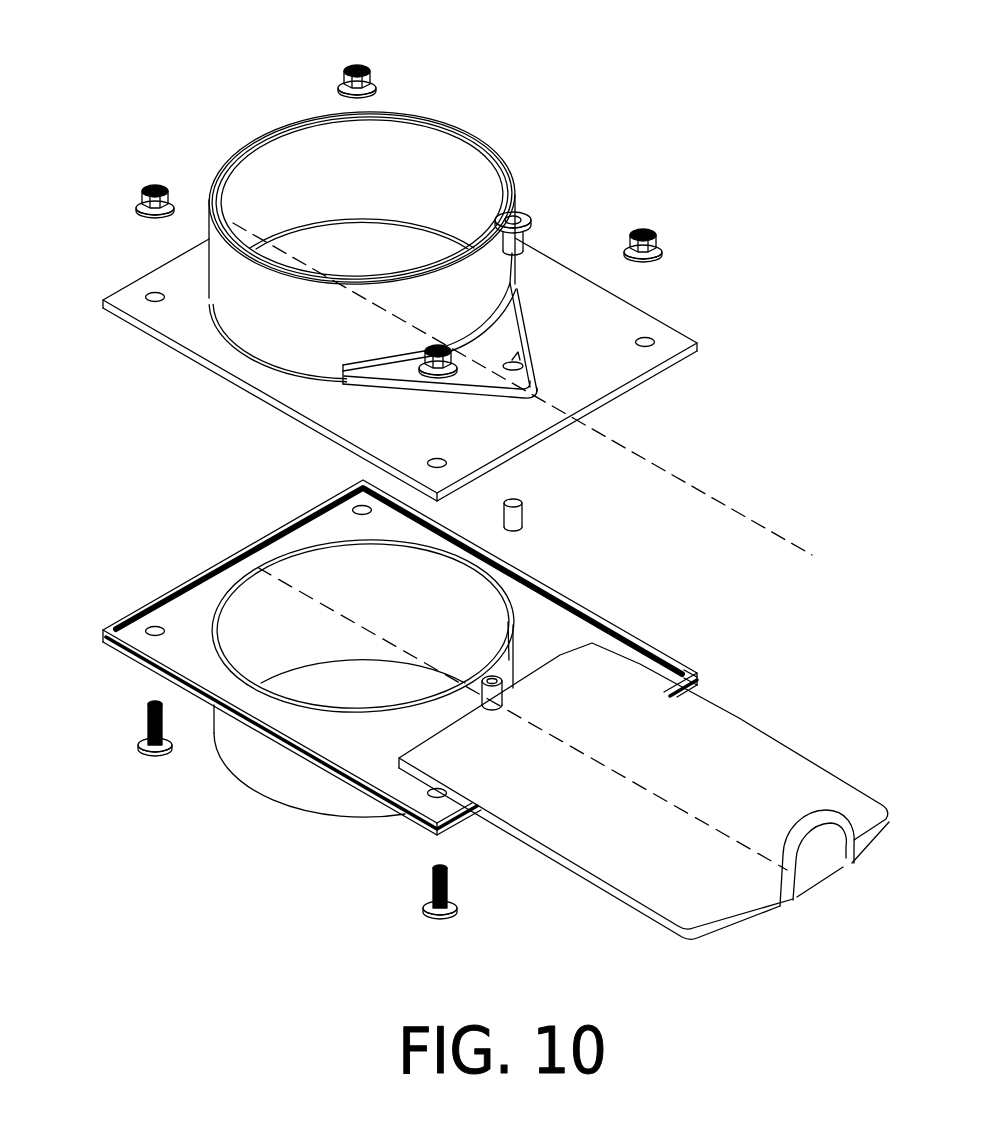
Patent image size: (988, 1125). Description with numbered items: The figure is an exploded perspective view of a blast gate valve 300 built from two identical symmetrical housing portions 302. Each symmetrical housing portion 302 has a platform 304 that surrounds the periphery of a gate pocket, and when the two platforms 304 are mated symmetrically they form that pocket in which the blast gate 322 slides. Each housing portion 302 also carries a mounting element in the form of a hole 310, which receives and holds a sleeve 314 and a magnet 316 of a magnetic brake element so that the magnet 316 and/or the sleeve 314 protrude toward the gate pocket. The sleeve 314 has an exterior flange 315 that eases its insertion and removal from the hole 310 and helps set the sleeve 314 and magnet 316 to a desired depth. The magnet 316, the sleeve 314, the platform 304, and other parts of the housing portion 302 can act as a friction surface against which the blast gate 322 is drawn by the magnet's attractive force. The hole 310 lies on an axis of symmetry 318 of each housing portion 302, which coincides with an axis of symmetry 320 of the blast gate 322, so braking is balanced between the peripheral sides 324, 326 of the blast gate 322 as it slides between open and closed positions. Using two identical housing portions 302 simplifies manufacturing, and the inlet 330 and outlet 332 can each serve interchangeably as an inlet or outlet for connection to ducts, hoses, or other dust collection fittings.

The gate valve 300 is at (750, 176).
The symmetrical housing portion 302 is at (278, 133).
The platform 304 is at (153, 270).
The hole 310 is at (529, 352).
The sleeve 314 is at (527, 238).
The exterior flange 315 is at (523, 212).
The magnet 316 is at (523, 512).
The axis of symmetry 318 is at (745, 516).
The axis of symmetry 320 is at (628, 799).
The blast gate 322 is at (742, 717).
The peripheral side 324 is at (605, 905).
The peripheral side 326 is at (854, 789).
The inlet 330 is at (389, 110).
The outlet 332 is at (332, 826).